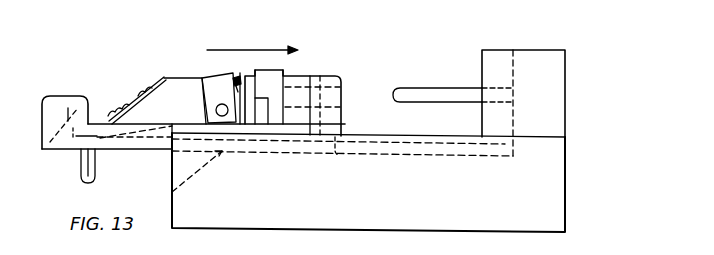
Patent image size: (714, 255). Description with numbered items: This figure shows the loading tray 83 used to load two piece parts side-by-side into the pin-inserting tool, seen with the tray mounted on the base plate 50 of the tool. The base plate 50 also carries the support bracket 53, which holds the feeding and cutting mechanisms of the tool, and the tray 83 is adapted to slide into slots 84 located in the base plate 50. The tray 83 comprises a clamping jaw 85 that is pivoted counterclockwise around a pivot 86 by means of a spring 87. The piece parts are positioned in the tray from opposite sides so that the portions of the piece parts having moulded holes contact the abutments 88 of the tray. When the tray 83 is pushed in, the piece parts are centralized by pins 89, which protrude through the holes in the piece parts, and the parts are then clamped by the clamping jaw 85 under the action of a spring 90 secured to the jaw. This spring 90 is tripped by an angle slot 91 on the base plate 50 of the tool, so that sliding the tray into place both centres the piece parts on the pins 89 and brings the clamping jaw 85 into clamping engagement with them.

The base plate 50 is at (550, 203).
The support bracket 53 is at (550, 112).
The loading tray 83 is at (55, 110).
The slots 84 is at (391, 158).
The clamping jaw 85 is at (203, 79).
The pivot 86 is at (207, 106).
The spring 87 is at (236, 74).
The abutments 88 is at (280, 73).
The pins 89 is at (440, 86).
The spring 90 is at (128, 102).
The angle slot 91 is at (172, 170).